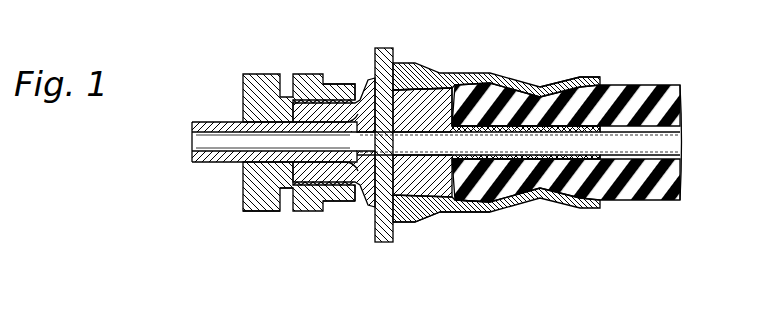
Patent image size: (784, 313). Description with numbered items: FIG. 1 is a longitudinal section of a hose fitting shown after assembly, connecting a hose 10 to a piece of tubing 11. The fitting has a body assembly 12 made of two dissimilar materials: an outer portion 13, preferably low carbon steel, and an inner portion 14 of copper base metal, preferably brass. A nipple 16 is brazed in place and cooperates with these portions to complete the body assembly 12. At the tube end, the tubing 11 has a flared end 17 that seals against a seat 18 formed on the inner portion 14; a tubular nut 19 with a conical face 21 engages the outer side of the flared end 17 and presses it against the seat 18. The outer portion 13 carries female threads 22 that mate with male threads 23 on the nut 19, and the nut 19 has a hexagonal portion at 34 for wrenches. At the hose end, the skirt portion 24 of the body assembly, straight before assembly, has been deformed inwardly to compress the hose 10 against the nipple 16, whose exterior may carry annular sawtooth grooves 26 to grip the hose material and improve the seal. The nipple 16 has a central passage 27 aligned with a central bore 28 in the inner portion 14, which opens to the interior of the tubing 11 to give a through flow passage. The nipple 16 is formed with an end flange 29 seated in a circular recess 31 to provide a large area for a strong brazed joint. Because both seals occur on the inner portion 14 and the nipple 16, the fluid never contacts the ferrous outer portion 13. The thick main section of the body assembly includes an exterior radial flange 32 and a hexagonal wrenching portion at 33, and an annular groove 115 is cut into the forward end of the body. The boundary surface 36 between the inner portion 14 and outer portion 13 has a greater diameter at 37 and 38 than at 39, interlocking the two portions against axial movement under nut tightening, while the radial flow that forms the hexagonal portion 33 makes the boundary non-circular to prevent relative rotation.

The hose 10 is at (662, 198).
The tubing 11 is at (192, 162).
The body assembly 12 is at (458, 70).
The outer portion 13 is at (428, 70).
The inner portion 14 is at (373, 80).
The nipple 16 is at (582, 90).
The flared end 17 is at (343, 201).
The seat 18 is at (355, 203).
The tubular nut 19 is at (244, 74).
The conical face 21 is at (404, 121).
The female threads 22 is at (307, 142).
The male threads 23 is at (287, 188).
The skirt portion 24 is at (540, 193).
The annular sawtooth grooves 26 is at (533, 191).
The central passage 27 is at (640, 144).
The central bore 28 is at (413, 137).
The end flange 29 is at (404, 169).
The circular recess 31 is at (438, 107).
The exterior radial flange 32 is at (385, 242).
The hexagonal wrenching portion 33 is at (424, 218).
The hexagonal portion 34 is at (257, 210).
The boundary surface 36 is at (407, 80).
The boundary surface location 37 is at (397, 223).
The boundary surface location 38 is at (467, 210).
The boundary surface location 39 is at (437, 218).
The annular groove 115 is at (343, 82).